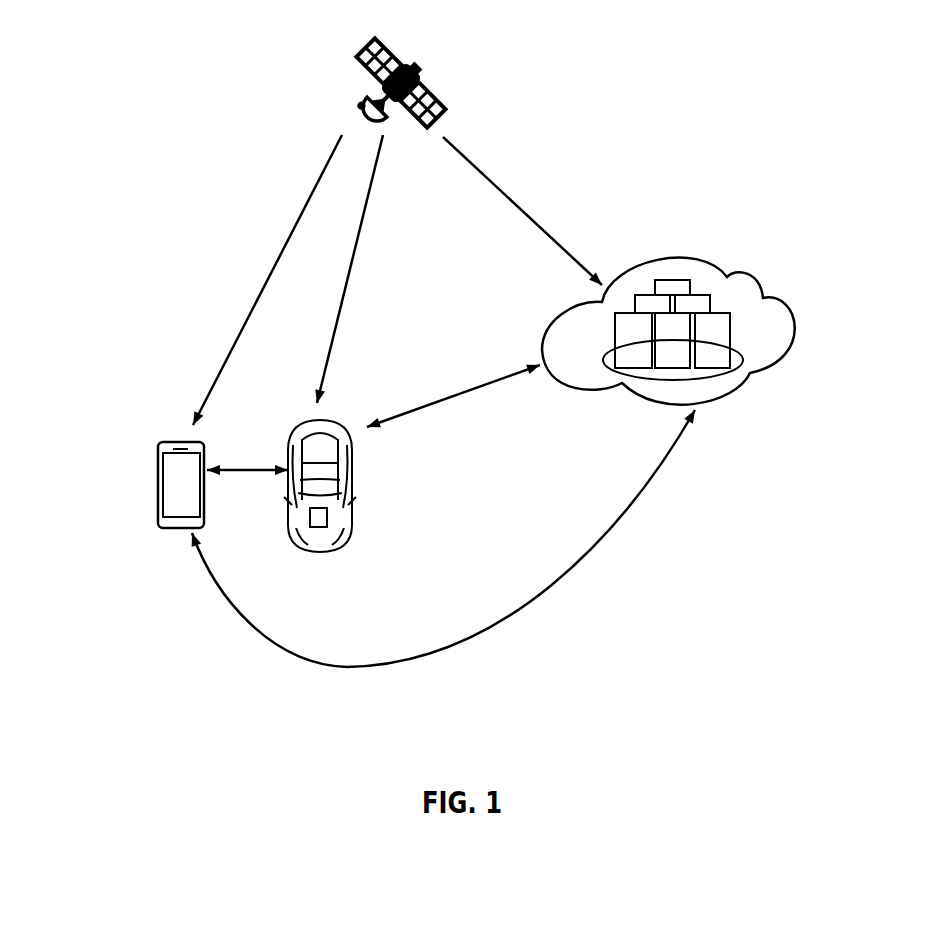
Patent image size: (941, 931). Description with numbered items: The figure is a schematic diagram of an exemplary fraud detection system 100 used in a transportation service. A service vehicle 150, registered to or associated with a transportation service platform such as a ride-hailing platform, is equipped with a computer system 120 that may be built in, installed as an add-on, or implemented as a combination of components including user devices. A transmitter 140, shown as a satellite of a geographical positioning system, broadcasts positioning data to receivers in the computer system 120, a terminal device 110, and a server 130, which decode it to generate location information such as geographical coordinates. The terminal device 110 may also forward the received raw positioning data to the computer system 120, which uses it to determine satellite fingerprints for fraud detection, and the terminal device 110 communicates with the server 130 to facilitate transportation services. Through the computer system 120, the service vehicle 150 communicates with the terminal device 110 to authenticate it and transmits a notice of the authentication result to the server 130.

The fraud detection system 100 is at (535, 737).
The terminal device 110 is at (160, 492).
The computer system 120 is at (322, 517).
The server 130 is at (798, 330).
The transmitter 140 is at (437, 88).
The service vehicle 150 is at (298, 530).